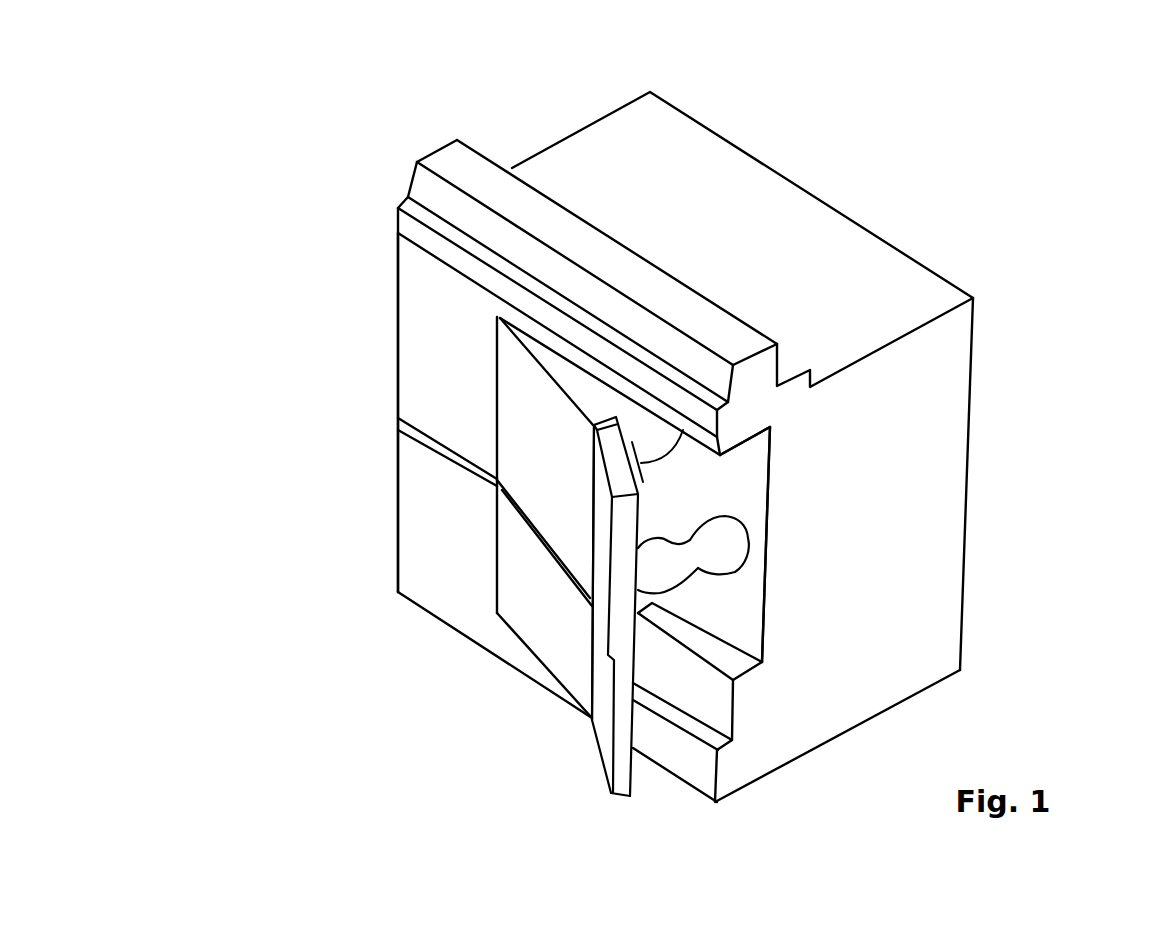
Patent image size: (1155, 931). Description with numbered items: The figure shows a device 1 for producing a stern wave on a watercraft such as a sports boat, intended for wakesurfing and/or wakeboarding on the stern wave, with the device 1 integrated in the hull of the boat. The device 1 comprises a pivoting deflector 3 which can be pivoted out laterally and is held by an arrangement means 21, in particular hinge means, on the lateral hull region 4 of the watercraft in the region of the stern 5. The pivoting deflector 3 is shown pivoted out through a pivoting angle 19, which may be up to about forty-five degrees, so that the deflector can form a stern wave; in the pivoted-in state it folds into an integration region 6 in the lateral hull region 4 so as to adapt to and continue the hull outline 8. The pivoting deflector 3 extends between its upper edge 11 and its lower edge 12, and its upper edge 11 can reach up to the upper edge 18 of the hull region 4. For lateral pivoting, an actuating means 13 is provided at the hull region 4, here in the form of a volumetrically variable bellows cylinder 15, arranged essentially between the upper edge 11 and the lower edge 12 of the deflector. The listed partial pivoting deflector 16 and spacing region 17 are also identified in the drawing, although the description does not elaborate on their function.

The device 1 is at (651, 424).
The pivoting deflector 3 is at (537, 697).
The hull region 4 is at (968, 412).
The stern 5 is at (830, 544).
The integration region 6 is at (724, 467).
The hull outline 8 is at (428, 412).
The upper edge of the pivoting deflector 11 is at (567, 358).
The lower edge of the pivoting deflector 12 is at (442, 600).
The actuating means 13 is at (763, 532).
The bellows cylinder 15 is at (670, 605).
The partial pivoting deflector 16 is at (590, 603).
The spacing region 17 is at (588, 498).
The upper edge of the hull region 18 is at (388, 157).
The pivoting angle 19 is at (657, 452).
The arrangement means 21 is at (495, 530).